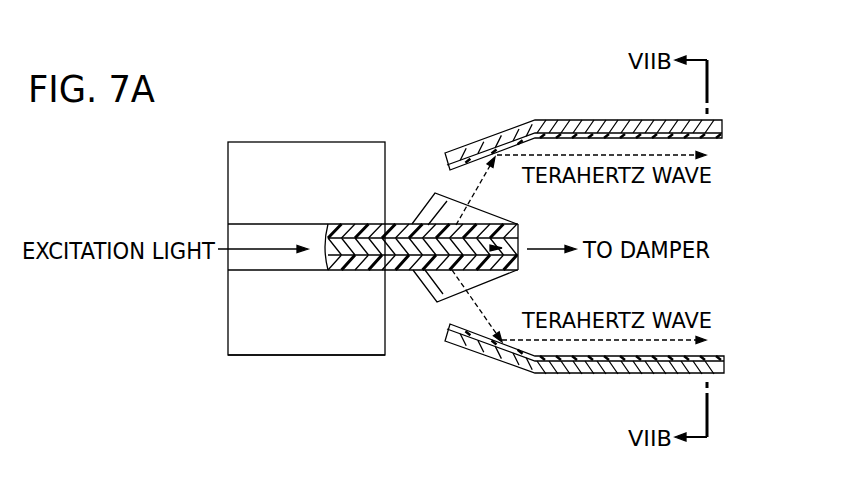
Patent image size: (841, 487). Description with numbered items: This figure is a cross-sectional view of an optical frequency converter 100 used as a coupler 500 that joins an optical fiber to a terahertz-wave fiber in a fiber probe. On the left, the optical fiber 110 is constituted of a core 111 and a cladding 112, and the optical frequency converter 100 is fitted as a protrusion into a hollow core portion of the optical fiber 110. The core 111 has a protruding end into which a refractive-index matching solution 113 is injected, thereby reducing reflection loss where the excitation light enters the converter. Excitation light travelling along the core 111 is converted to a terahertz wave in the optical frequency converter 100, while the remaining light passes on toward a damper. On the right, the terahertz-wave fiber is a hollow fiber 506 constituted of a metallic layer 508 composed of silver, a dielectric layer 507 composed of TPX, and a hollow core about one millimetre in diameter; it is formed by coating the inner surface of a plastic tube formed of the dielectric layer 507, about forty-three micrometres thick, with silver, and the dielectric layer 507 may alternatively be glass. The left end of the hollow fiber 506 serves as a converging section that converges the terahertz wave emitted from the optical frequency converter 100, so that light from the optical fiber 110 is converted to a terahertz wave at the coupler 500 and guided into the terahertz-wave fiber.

The optical frequency converter 100 is at (419, 200).
The optical fiber 110 is at (225, 100).
The core 111 is at (263, 262).
The cladding 112 is at (327, 347).
The refractive-index matching solution 113 is at (326, 224).
The coupler 500 is at (612, 217).
The hollow fiber 506 is at (579, 217).
The dielectric layer 507 is at (556, 373).
The metallic layer 508 is at (597, 373).